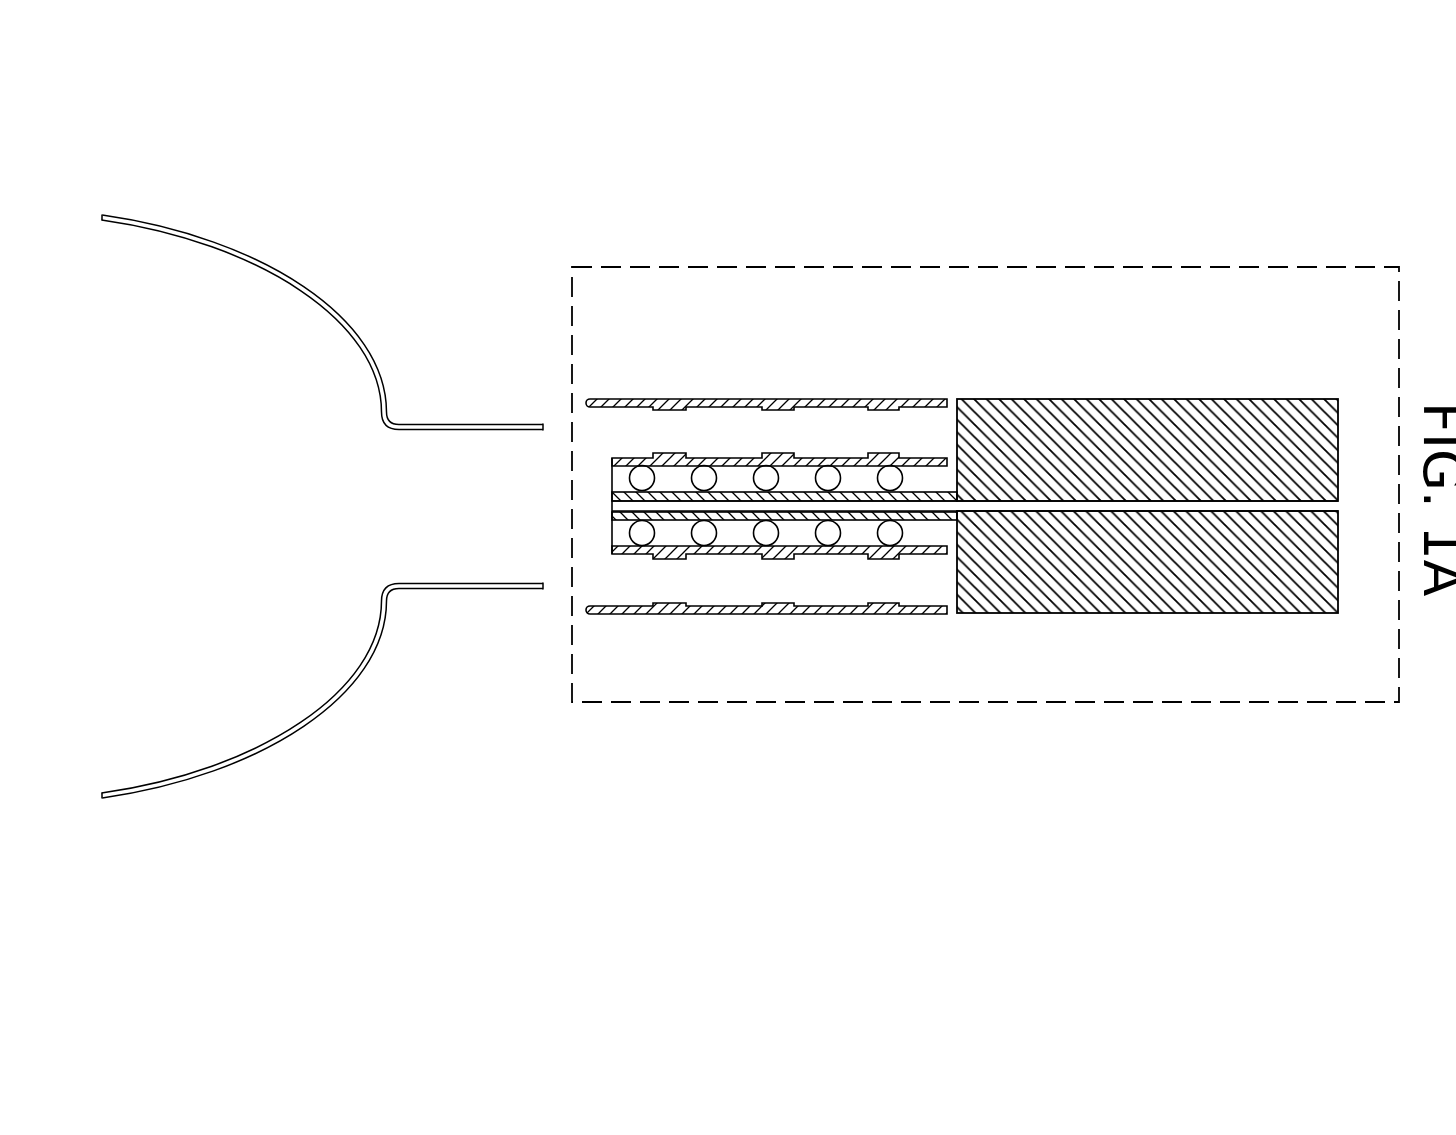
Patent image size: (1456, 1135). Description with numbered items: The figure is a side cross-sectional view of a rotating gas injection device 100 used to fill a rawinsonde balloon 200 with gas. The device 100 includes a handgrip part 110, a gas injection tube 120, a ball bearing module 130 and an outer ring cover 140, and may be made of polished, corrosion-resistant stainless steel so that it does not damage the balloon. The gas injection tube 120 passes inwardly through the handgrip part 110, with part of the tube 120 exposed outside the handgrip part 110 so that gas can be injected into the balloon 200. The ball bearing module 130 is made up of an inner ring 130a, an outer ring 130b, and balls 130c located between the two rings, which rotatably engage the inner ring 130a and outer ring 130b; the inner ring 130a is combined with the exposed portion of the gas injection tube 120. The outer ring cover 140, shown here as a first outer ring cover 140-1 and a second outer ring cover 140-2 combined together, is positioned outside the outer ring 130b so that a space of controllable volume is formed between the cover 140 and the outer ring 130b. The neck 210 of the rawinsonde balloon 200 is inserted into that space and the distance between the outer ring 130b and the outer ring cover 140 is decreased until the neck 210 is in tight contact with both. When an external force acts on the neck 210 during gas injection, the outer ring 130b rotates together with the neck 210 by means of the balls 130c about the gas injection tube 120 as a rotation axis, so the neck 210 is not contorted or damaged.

The rotating gas injection device 100 is at (1185, 244).
The handgrip part 110 is at (1182, 398).
The gas injection tube 120 is at (1320, 501).
The ball bearing module 130 is at (724, 473).
The inner ring 130a is at (616, 515).
The outer ring 130b is at (722, 463).
The balls 130c is at (629, 478).
The outer ring cover 140 is at (766, 477).
The first outer ring cover 140-1 is at (847, 398).
The second outer ring cover 140-2 is at (845, 615).
The rawinsonde balloon 200 is at (322, 505).
The neck 210 is at (416, 421).